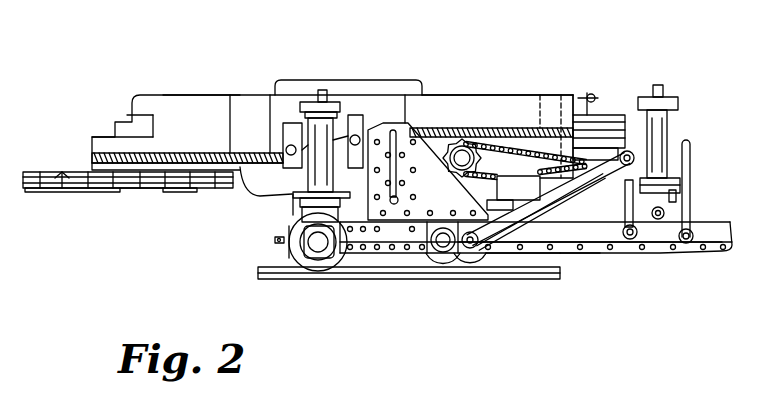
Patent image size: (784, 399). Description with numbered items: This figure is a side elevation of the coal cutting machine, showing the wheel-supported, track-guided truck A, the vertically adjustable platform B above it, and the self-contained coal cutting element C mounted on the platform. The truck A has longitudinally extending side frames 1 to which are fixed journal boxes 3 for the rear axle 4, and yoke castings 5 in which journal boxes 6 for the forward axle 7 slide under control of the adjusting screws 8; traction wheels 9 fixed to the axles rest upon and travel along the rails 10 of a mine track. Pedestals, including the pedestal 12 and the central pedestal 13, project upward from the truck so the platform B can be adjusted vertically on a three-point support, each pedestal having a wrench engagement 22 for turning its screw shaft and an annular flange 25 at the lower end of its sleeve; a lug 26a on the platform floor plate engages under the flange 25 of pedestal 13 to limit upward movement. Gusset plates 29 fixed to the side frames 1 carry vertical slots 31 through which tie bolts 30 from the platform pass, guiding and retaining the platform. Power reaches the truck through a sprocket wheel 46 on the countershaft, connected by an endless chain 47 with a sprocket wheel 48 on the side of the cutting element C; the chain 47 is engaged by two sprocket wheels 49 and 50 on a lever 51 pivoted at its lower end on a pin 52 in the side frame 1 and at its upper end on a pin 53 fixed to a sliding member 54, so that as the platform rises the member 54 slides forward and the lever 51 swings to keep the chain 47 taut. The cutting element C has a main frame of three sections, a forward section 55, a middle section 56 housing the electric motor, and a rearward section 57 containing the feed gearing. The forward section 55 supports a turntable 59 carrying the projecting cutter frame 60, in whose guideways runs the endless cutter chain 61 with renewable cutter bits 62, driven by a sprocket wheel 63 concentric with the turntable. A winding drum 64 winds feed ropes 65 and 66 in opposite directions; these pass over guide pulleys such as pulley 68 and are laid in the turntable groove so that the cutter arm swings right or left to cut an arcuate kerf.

The side frame 1 is at (657, 240).
The journal box 3 is at (425, 233).
The rear axle 4 is at (465, 263).
The yoke casting 5 is at (306, 262).
The journal box 6 is at (288, 243).
The forward axle 7 is at (322, 252).
The adjusting screw 8 is at (276, 237).
The traction wheel 9 is at (428, 262).
The rail 10 is at (532, 280).
The pedestal 12 is at (283, 122).
The pedestal 13 is at (668, 118).
The wrench engagement 22 is at (320, 90).
The annular flange 25 is at (302, 180).
The lug 26a is at (677, 206).
The gusset plate 29 is at (422, 157).
The tie bolt 30 is at (398, 198).
The vertical slot 31 is at (393, 130).
The sprocket wheel 46 is at (573, 254).
The endless chain 47 is at (530, 150).
The sprocket wheel 48 is at (480, 140).
The sprocket wheel 49 is at (618, 115).
The sprocket wheel 50 is at (563, 97).
The lever 51 is at (537, 214).
The pin 52 is at (540, 266).
The pin 53 is at (633, 165).
The sliding member 54 is at (648, 170).
The forward frame section 55 is at (222, 97).
The middle frame section 56 is at (358, 82).
The rearward frame section 57 is at (515, 98).
The turntable 59 is at (138, 163).
The cutter frame 60 is at (47, 172).
The cutter chain 61 is at (75, 192).
The cutter bit 62 is at (63, 173).
The sprocket wheel 63 is at (175, 192).
The winding drum 64 is at (589, 95).
The feed rope 65 is at (178, 153).
The feed rope 66 is at (195, 153).
The guide pulley 68 is at (622, 123).
The truck A is at (600, 247).
The platform B is at (292, 202).
The coal cutting element C is at (332, 107).